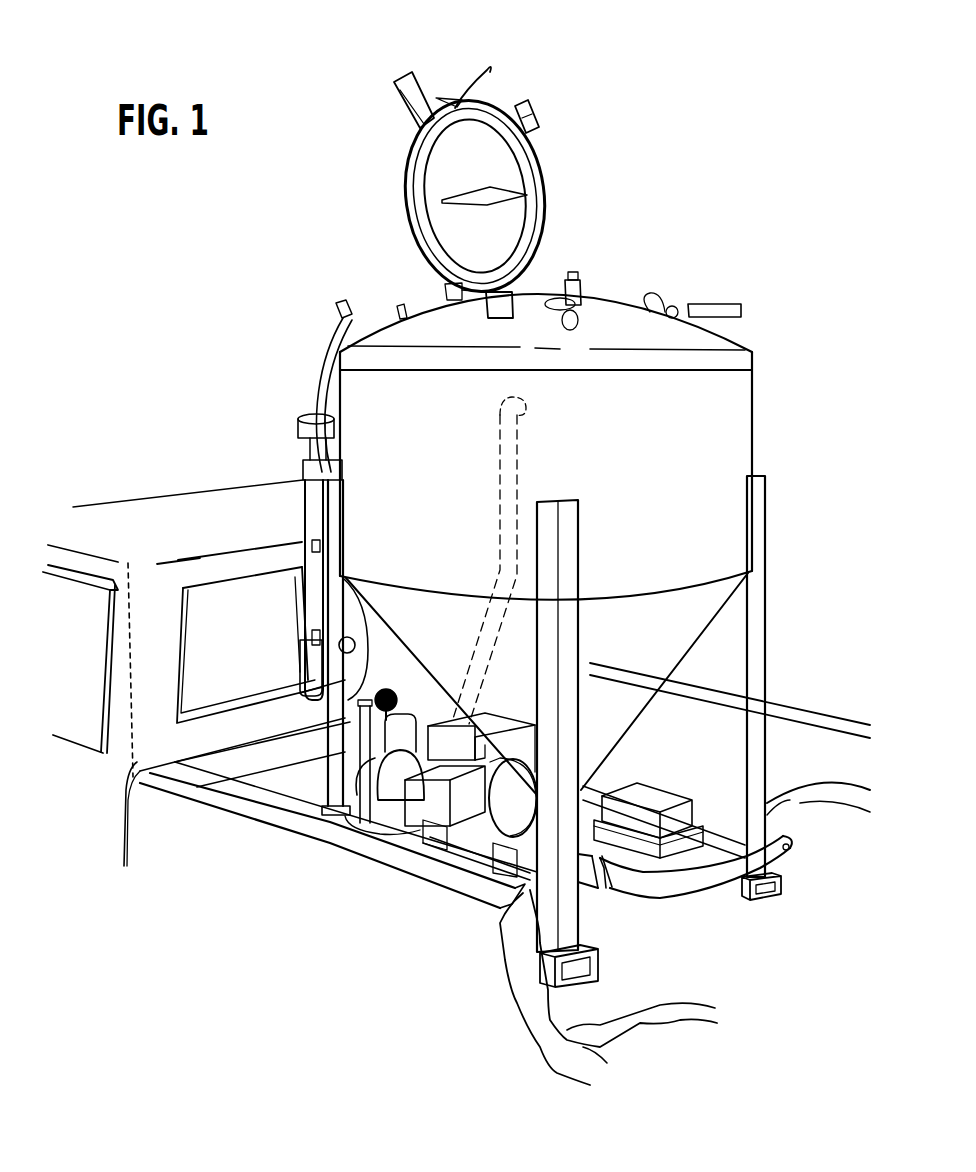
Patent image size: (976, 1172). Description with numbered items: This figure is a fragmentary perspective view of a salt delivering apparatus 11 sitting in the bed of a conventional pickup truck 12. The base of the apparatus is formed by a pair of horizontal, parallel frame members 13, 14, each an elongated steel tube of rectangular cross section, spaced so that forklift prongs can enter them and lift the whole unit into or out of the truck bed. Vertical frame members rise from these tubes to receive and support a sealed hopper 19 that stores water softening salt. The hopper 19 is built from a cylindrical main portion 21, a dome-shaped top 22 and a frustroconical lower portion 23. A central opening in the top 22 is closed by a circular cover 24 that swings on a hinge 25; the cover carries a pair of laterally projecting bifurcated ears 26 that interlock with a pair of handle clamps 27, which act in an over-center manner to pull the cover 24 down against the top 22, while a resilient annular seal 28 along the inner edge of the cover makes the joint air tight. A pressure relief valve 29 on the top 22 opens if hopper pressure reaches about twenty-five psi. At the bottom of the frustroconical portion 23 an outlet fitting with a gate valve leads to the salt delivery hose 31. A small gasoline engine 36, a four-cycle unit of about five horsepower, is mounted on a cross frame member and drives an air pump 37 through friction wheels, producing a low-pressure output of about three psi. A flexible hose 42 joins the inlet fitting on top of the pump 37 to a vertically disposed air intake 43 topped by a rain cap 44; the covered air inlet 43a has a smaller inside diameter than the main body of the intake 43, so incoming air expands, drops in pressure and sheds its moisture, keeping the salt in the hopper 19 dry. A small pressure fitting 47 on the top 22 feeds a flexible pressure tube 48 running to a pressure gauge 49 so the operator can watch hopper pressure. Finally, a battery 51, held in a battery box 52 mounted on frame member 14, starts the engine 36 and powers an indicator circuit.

The salt delivering apparatus 11 is at (697, 160).
The pickup truck 12 is at (168, 497).
The frame member 13 is at (598, 968).
The frame member 14 is at (778, 888).
The hopper 19 is at (758, 389).
The cylindrical main portion 21 is at (726, 436).
The dome-shaped top 22 is at (718, 340).
The frustroconical lower portion 23 is at (693, 620).
The circular cover 24 is at (407, 152).
The hinge 25 is at (444, 286).
The bifurcated ears 26 is at (404, 80).
The handle clamps 27 is at (577, 312).
The resilient annular seal 28 is at (417, 211).
The pressure relief valve 29 is at (486, 310).
The salt delivery hose 31 is at (656, 890).
The gasoline engine 36 is at (520, 731).
The air pump 37 is at (330, 832).
The flexible hose 42 is at (302, 652).
The air intake 43 is at (300, 505).
The air inlet 43a is at (305, 440).
The rain cap 44 is at (300, 412).
The pressure fitting 47 is at (338, 312).
The flexible pressure tube 48 is at (318, 350).
The pressure gauge 49 is at (406, 702).
The battery 51 is at (641, 792).
The battery box 52 is at (673, 850).